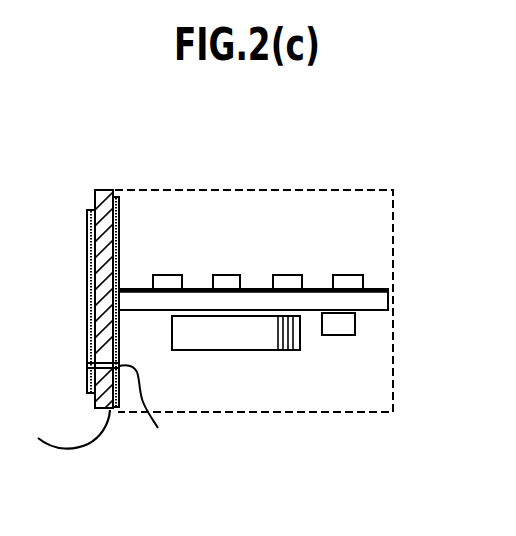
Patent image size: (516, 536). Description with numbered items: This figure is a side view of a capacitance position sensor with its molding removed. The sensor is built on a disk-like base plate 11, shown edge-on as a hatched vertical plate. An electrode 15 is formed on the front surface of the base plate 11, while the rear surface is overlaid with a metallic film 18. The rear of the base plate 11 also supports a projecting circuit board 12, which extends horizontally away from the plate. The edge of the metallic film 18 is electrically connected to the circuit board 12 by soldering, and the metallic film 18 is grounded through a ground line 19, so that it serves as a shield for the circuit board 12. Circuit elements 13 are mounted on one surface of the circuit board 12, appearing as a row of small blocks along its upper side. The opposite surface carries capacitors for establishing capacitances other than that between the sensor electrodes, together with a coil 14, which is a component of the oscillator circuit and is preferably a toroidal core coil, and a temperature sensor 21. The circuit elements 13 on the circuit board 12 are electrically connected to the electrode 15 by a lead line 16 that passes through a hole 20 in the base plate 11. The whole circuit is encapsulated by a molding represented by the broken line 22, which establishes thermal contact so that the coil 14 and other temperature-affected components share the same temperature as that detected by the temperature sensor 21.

The base plate 11 is at (104, 189).
The circuit board 12 is at (388, 300).
The circuit elements 13 is at (363, 283).
The coil 14 is at (261, 350).
The electrode 15 is at (87, 248).
The lead line 16 is at (150, 311).
The metallic film 18 is at (119, 233).
The ground line 19 is at (90, 446).
The hole 20 is at (146, 412).
The temperature sensor 21 is at (355, 325).
The molding 22 is at (338, 189).